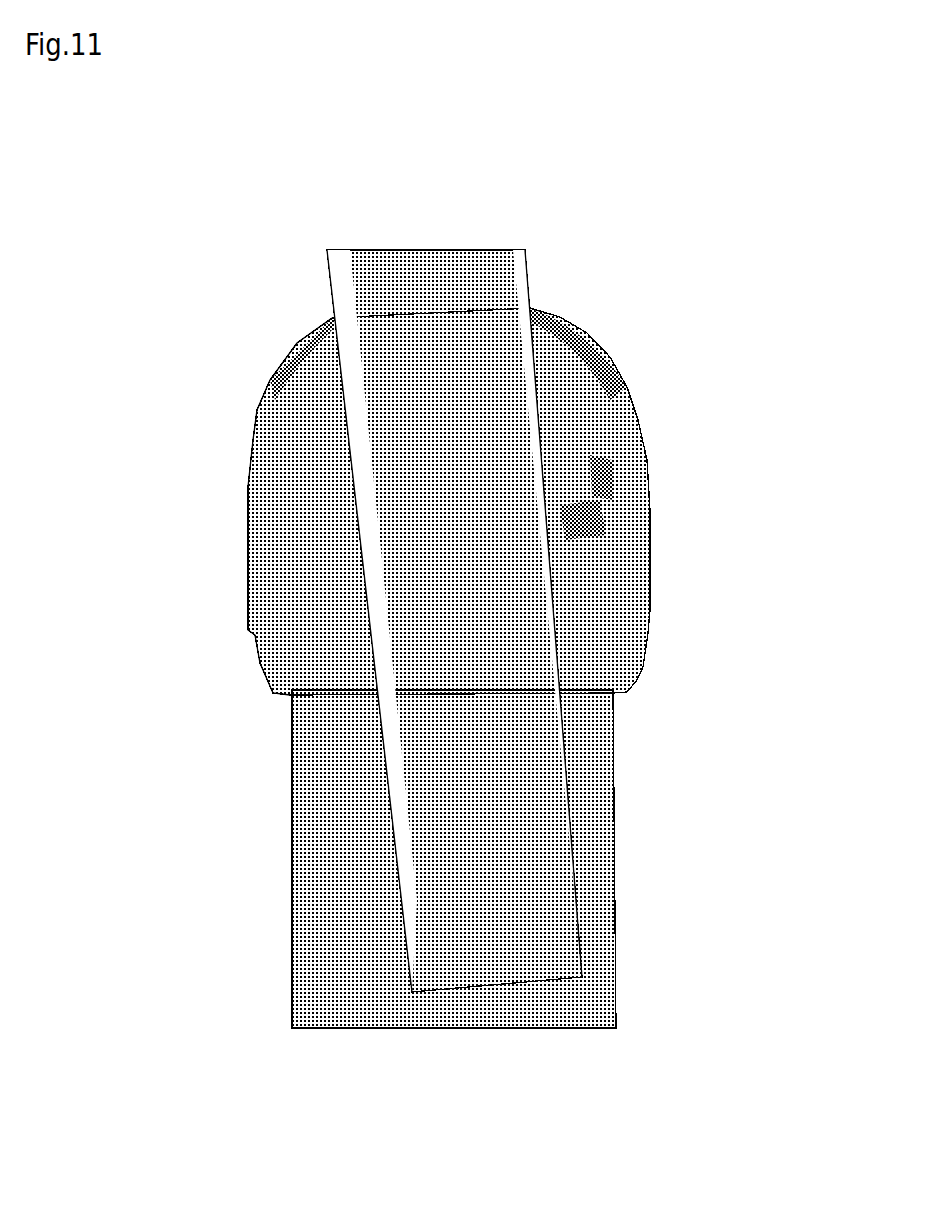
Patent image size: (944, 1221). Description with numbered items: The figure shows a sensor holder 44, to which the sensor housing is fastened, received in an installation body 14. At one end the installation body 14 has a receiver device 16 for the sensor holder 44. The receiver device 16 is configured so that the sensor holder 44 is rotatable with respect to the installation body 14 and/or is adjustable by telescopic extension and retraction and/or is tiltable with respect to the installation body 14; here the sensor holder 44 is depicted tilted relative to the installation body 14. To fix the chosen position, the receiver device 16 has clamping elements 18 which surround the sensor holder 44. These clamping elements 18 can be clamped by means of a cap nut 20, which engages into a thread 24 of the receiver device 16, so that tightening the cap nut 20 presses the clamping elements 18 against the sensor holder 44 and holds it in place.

The installation body 14 is at (607, 737).
The receiver device 16 is at (226, 561).
The clamping elements 18 is at (555, 532).
The cap nut 20 is at (620, 437).
The thread 24 is at (610, 490).
The sensor holder 44 is at (518, 280).